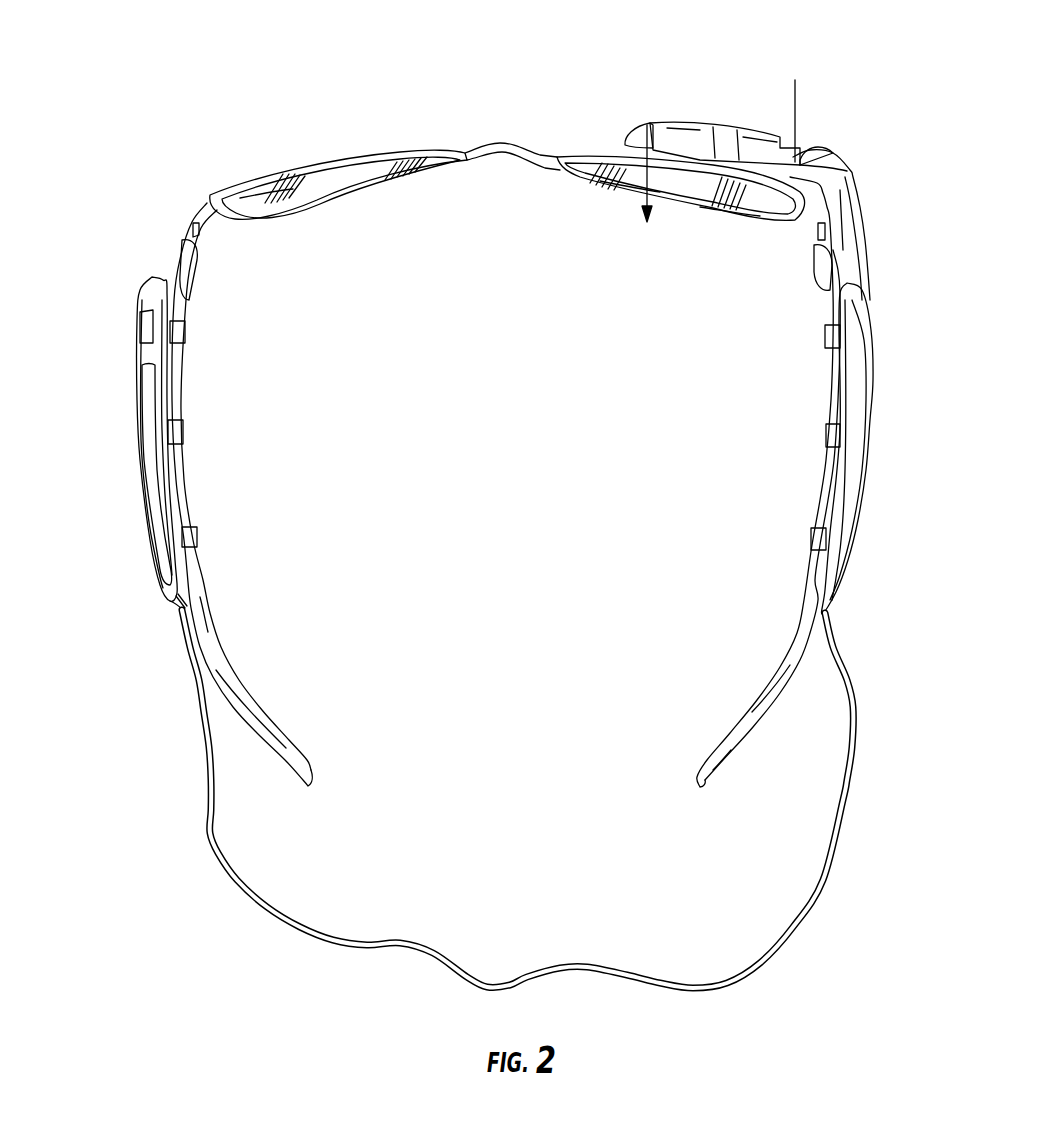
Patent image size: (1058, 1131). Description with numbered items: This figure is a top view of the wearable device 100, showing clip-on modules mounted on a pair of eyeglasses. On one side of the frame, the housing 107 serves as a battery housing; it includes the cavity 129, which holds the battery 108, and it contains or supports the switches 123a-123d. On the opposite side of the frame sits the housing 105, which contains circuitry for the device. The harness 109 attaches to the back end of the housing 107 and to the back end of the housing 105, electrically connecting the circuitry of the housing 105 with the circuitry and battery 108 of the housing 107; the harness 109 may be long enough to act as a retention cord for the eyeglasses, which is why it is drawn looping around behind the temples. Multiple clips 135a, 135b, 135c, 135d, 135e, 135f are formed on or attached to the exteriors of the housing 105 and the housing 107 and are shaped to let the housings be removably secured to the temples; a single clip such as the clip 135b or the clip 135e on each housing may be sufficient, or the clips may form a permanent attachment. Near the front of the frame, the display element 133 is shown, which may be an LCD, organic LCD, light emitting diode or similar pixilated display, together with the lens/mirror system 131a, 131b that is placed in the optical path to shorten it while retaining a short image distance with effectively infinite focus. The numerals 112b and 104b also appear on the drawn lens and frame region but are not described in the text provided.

The wearable device 100 is at (343, 78).
The lens frame portion 112b is at (570, 144).
The lens 104b is at (587, 180).
The lens/mirror system 131b is at (640, 137).
The display element 133 is at (733, 127).
The lens/mirror system 131a is at (822, 156).
The cavity 129 is at (141, 400).
The battery 108 is at (163, 525).
The switches 123a-123d is at (137, 327).
The housing 107 is at (174, 606).
The clip 135a is at (187, 335).
The clip 135b is at (185, 433).
The clip 135c is at (198, 537).
The clip 135d is at (825, 338).
The clip 135e is at (826, 437).
The clip 135f is at (812, 537).
The housing 105 is at (850, 567).
The harness 109 is at (257, 900).